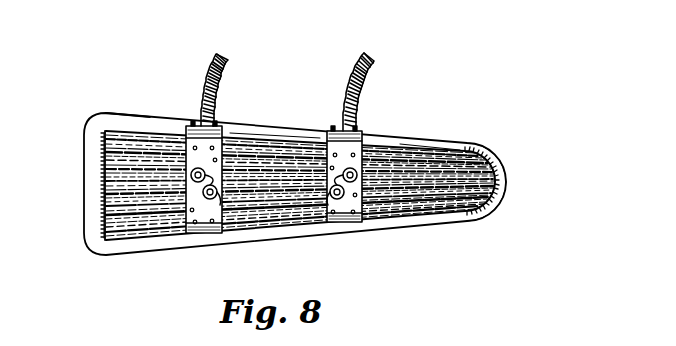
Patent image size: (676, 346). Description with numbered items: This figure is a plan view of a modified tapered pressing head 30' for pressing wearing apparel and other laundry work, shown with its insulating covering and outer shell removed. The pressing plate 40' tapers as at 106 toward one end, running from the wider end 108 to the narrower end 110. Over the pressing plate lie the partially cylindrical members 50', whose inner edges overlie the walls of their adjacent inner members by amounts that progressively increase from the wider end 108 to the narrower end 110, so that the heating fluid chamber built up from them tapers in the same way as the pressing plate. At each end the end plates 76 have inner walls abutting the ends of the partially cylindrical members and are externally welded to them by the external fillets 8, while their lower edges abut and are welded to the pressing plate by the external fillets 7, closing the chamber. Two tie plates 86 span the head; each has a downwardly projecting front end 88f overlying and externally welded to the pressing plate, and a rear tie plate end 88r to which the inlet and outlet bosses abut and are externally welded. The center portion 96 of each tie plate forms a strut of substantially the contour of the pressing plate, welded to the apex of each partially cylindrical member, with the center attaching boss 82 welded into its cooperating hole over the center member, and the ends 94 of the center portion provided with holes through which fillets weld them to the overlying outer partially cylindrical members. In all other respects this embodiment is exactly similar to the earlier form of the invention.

The external fillets 7 is at (103, 195).
The external fillets 8 is at (103, 173).
The end plates 76 is at (101, 150).
The center attaching boss 82 is at (222, 212).
The tie plates 86 is at (192, 203).
The rear tie plate end 88r is at (203, 140).
The front end of tie plate 88f is at (222, 225).
The ends of the center portion of the tie plates 94 is at (197, 138).
The center portion of the tie plates 96 is at (188, 163).
The taper of the pressing plate 106 is at (424, 152).
The wider end 108 is at (129, 106).
The narrower end 110 is at (477, 137).
The tapered pressing head 30' is at (518, 150).
The pressing plate 40' is at (511, 201).
The partially cylindrical members 50' is at (275, 126).